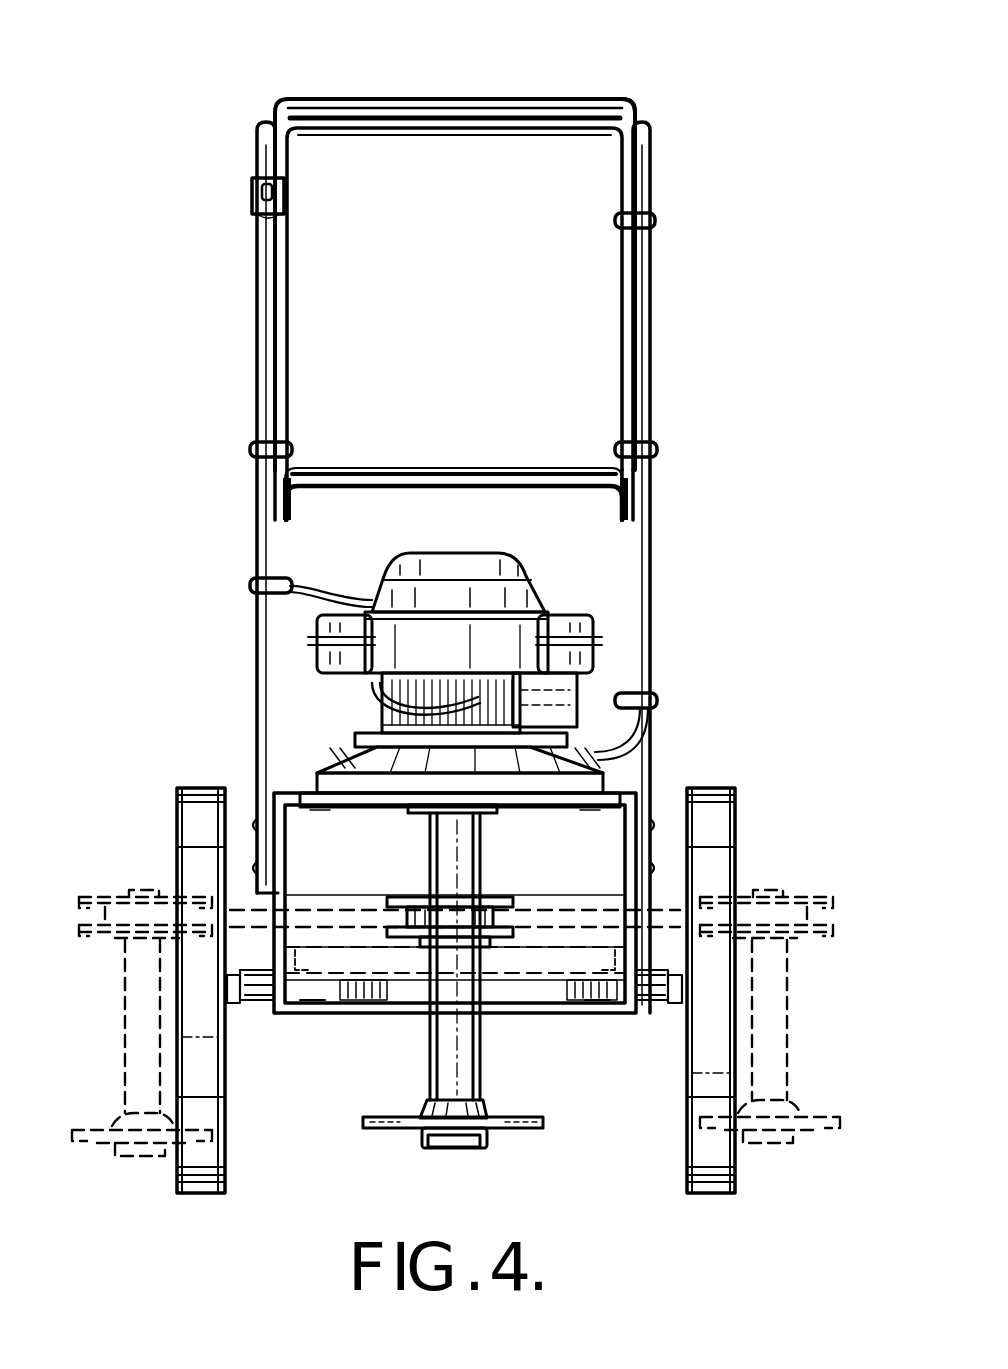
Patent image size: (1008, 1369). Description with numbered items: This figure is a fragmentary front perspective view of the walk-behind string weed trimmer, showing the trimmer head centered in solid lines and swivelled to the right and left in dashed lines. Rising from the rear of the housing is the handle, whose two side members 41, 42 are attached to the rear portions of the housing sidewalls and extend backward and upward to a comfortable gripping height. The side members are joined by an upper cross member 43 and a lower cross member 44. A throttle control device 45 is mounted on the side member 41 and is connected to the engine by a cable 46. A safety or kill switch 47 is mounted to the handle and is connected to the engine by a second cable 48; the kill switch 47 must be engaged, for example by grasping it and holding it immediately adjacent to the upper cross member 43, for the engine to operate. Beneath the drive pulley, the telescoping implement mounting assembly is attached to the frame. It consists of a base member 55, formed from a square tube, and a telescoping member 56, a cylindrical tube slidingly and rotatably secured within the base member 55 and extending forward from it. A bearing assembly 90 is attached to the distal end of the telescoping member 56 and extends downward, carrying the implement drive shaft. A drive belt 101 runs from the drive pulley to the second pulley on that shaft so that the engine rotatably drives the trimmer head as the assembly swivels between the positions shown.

The side member 41 is at (651, 273).
The side member 42 is at (257, 281).
The upper cross member 43 is at (449, 104).
The lower cross member 44 is at (480, 467).
The throttle control device 45 is at (298, 190).
The cable 46 is at (287, 375).
The kill switch 47 is at (578, 100).
The cable 48 is at (622, 333).
The base member 55 is at (410, 1010).
The telescoping member 56 is at (251, 1002).
The bearing assembly 90 is at (124, 882).
The drive belt 101 is at (340, 913).